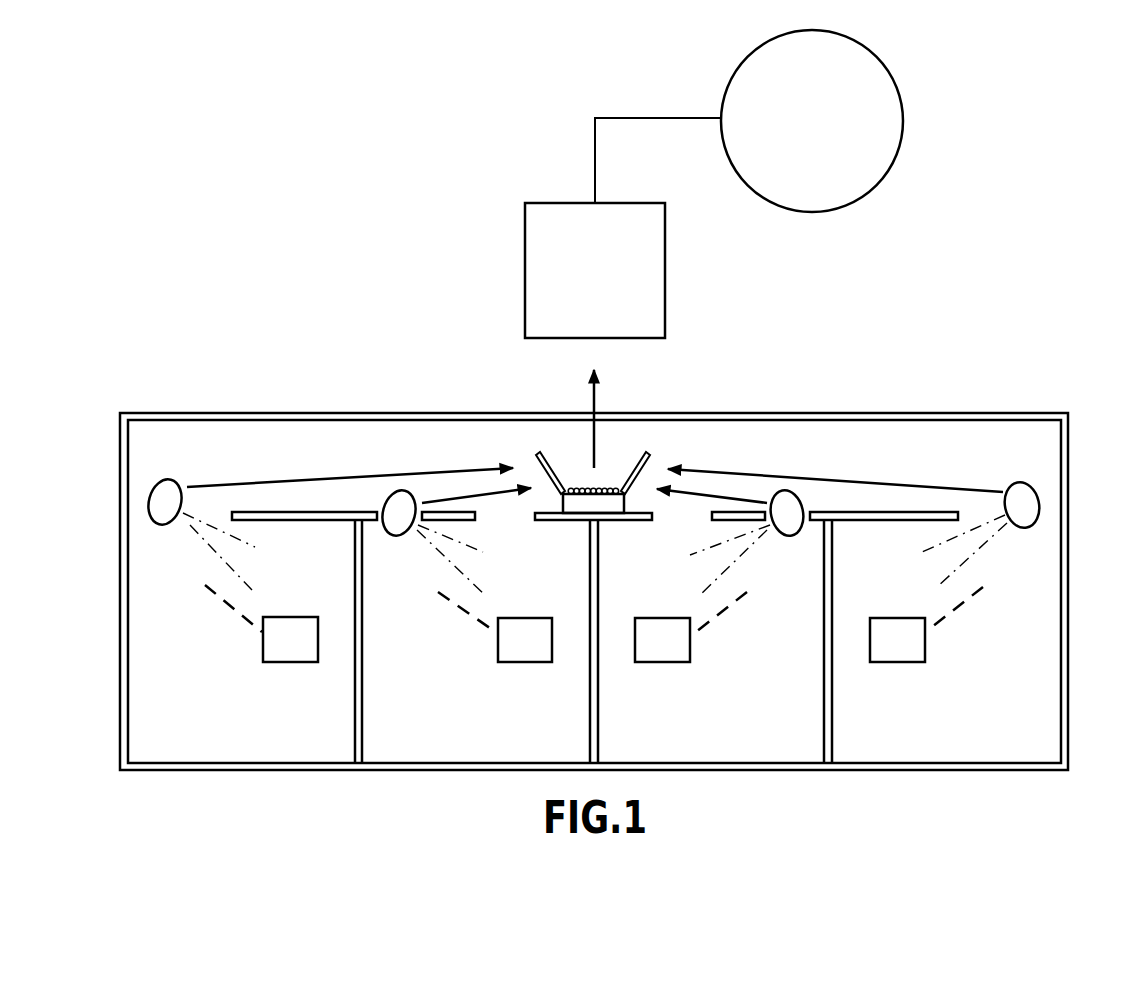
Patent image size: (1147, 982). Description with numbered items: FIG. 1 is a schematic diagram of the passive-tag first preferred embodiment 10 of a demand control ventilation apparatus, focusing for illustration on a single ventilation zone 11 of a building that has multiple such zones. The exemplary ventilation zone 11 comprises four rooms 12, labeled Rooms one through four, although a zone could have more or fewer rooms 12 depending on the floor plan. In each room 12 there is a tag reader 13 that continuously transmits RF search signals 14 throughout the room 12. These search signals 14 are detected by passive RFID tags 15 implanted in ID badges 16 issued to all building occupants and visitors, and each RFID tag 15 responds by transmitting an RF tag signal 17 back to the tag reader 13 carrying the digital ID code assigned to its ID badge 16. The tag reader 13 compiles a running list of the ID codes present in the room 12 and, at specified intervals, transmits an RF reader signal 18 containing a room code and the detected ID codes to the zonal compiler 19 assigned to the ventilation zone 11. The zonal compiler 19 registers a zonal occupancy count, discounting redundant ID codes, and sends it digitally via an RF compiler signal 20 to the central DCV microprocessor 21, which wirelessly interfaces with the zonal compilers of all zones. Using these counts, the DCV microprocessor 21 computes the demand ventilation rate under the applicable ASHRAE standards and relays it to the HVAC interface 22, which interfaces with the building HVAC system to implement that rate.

The first preferred embodiment 10 is at (1052, 170).
The ventilation zone 11 is at (1087, 434).
The room 12 is at (163, 746).
The tag reader 13 is at (175, 480).
The RF search signal 14 is at (257, 547).
The passive RFID tag 15 is at (303, 653).
The ID badge 16 is at (281, 676).
The RF tag signal 17 is at (258, 635).
The RF reader signal 18 is at (347, 478).
The zonal compiler 19 is at (605, 488).
The RF compiler signal 20 is at (592, 403).
The DCV microprocessor 21 is at (583, 327).
The HVAC interface 22 is at (798, 161).